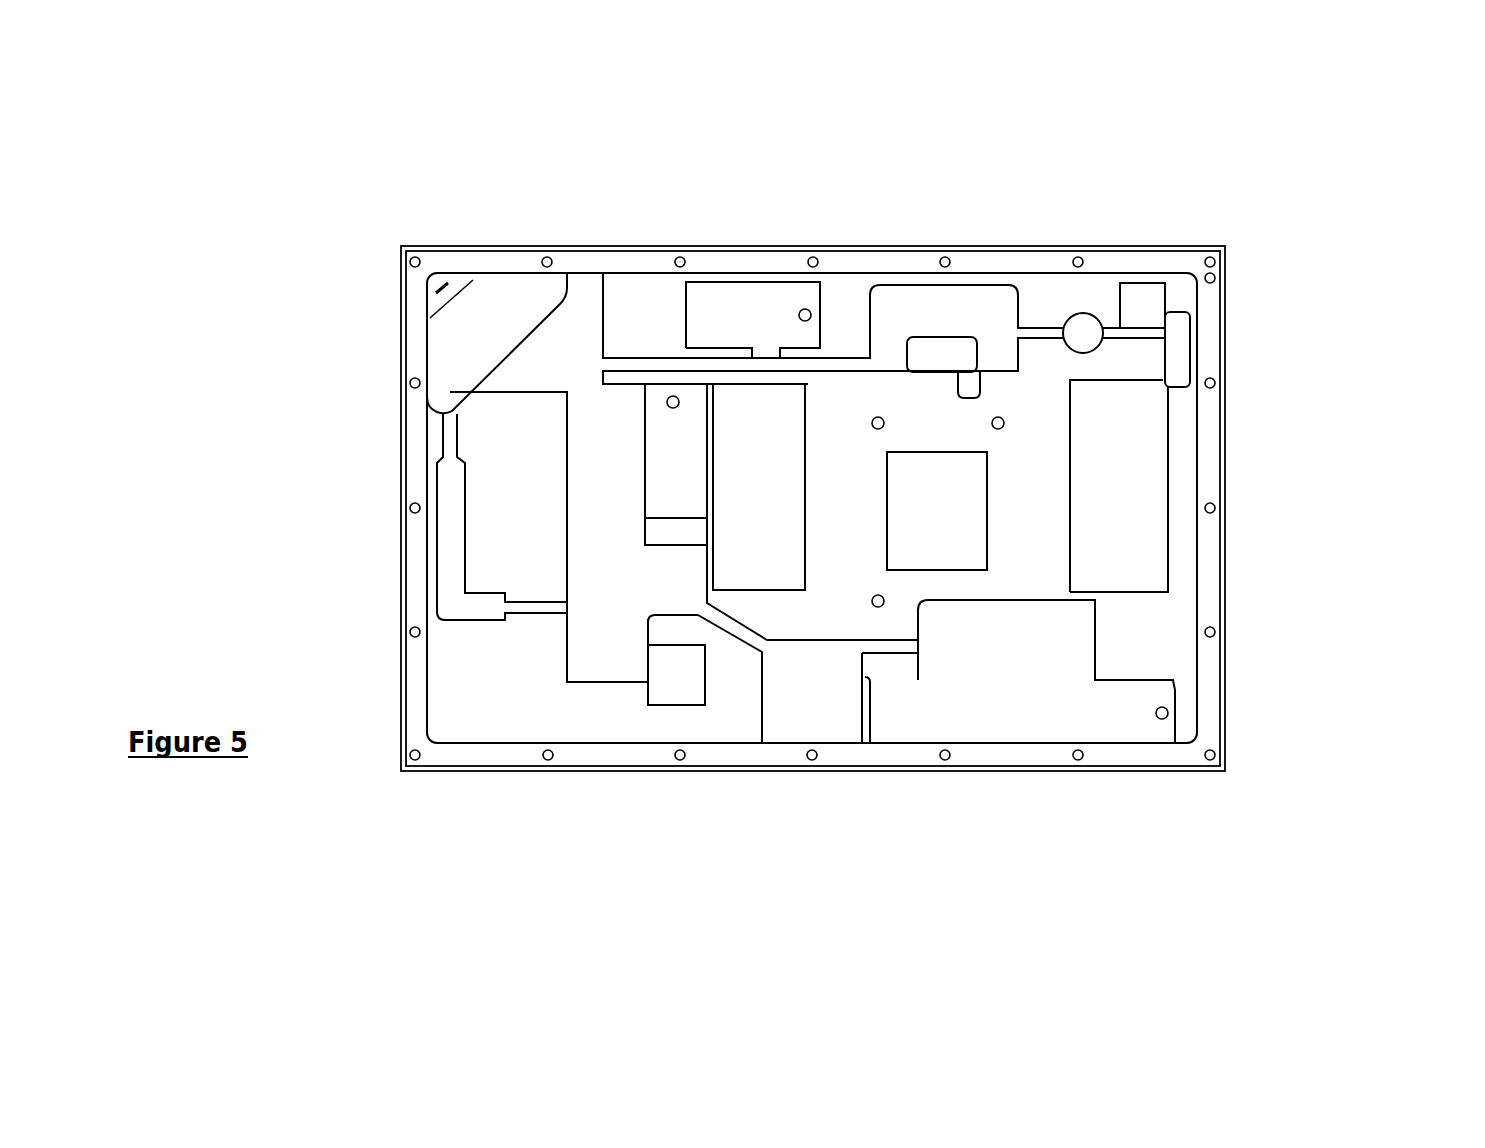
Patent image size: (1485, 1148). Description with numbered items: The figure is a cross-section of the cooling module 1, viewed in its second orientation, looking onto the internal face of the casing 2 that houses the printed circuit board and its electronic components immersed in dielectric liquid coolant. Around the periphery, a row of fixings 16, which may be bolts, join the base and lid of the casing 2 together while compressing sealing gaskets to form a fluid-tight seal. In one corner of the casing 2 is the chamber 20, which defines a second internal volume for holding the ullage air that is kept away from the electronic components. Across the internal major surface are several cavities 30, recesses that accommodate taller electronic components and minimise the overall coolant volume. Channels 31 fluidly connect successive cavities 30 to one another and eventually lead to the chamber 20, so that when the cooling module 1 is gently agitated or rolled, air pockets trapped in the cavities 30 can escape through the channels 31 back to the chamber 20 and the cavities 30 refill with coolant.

The cooling module 1 is at (1303, 256).
The casing 2 is at (1212, 452).
The fixings 16 is at (1212, 630).
The chamber 20 is at (497, 296).
The cavities 30 is at (943, 308).
The channels 31 is at (628, 365).